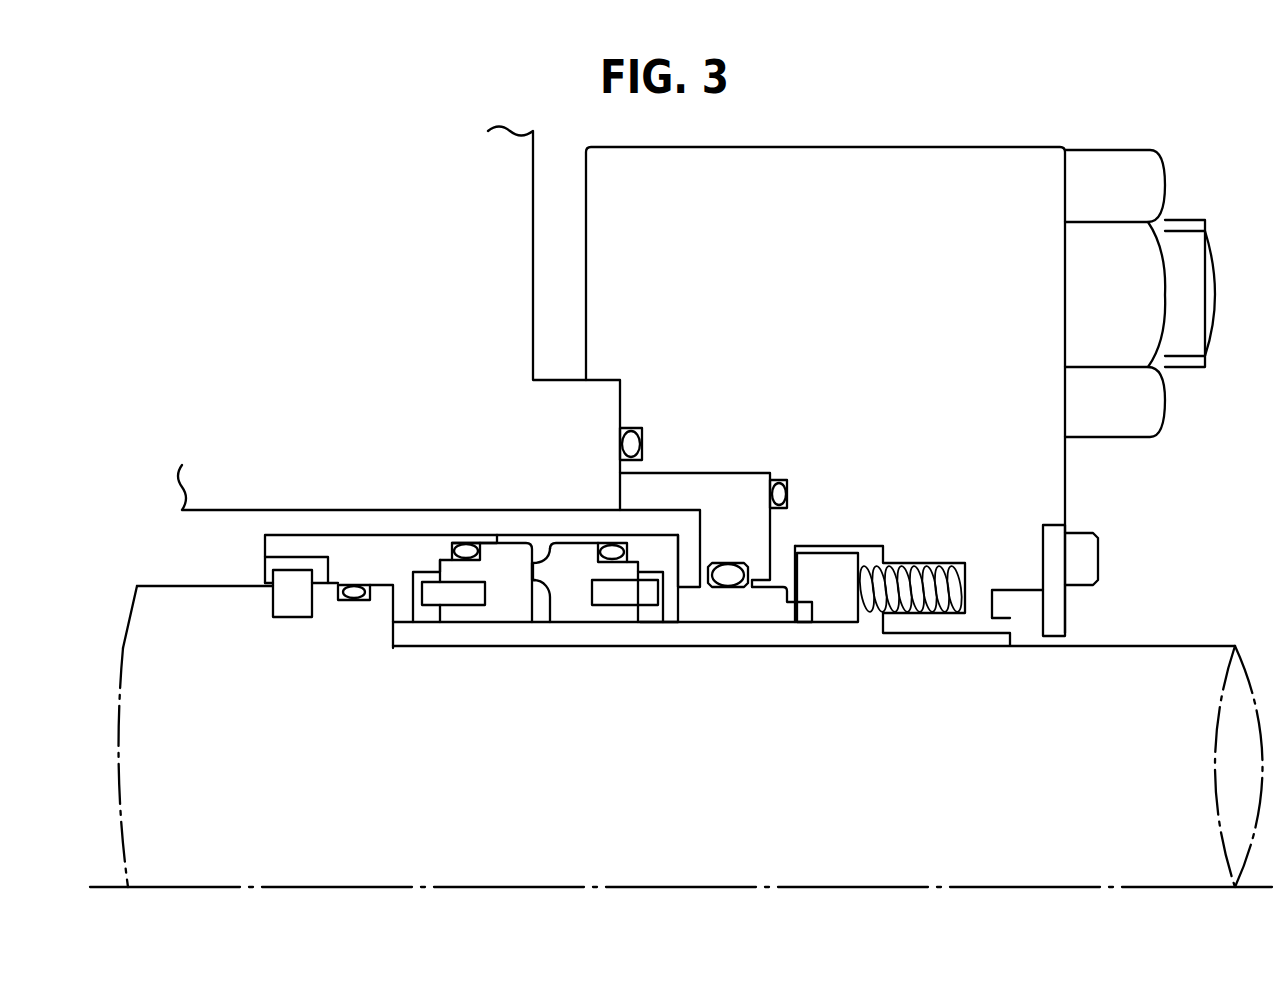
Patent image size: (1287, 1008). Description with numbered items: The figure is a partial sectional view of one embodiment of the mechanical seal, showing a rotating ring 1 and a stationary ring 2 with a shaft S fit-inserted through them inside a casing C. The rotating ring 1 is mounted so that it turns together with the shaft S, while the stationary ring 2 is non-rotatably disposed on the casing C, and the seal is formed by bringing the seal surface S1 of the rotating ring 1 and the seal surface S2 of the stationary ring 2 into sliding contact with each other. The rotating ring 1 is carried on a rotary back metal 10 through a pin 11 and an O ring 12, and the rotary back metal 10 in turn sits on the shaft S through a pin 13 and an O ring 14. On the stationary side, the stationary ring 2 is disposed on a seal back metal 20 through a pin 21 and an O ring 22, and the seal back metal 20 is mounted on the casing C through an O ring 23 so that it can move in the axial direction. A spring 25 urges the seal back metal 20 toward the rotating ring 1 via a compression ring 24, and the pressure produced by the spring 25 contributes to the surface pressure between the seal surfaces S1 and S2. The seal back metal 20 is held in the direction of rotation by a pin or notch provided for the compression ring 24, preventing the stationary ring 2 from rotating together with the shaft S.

The rotating ring 1 is at (505, 614).
The stationary ring 2 is at (596, 614).
The rotary back metal 10 is at (407, 568).
The pin 11 is at (435, 600).
The O ring 12 is at (462, 546).
The pin 13 is at (288, 612).
The O ring 14 is at (350, 600).
The seal back metal 20 is at (718, 618).
The pin 21 is at (660, 604).
The O ring 22 is at (611, 546).
The O ring 23 is at (735, 572).
The compression ring 24 is at (840, 590).
The spring 25 is at (877, 602).
The seal surface S1 is at (550, 597).
The seal surface S2 is at (532, 573).
The casing C is at (787, 410).
The shaft S is at (1038, 806).